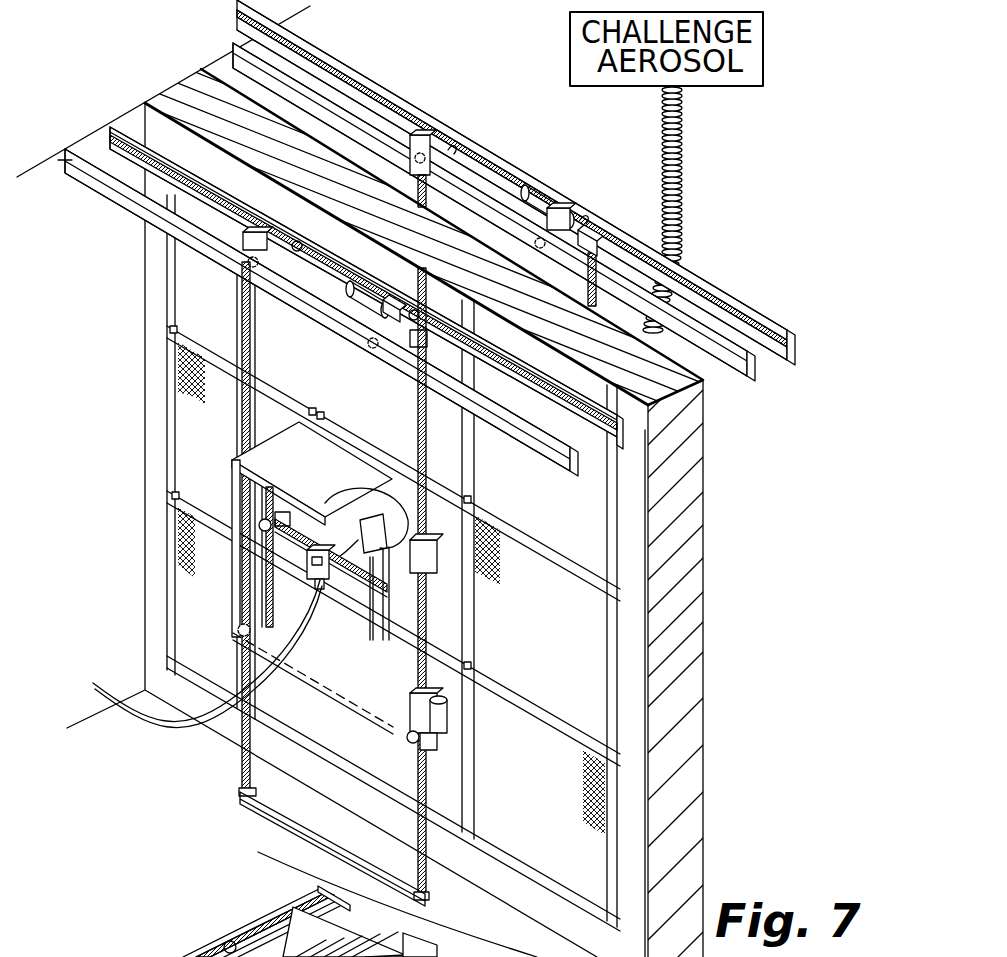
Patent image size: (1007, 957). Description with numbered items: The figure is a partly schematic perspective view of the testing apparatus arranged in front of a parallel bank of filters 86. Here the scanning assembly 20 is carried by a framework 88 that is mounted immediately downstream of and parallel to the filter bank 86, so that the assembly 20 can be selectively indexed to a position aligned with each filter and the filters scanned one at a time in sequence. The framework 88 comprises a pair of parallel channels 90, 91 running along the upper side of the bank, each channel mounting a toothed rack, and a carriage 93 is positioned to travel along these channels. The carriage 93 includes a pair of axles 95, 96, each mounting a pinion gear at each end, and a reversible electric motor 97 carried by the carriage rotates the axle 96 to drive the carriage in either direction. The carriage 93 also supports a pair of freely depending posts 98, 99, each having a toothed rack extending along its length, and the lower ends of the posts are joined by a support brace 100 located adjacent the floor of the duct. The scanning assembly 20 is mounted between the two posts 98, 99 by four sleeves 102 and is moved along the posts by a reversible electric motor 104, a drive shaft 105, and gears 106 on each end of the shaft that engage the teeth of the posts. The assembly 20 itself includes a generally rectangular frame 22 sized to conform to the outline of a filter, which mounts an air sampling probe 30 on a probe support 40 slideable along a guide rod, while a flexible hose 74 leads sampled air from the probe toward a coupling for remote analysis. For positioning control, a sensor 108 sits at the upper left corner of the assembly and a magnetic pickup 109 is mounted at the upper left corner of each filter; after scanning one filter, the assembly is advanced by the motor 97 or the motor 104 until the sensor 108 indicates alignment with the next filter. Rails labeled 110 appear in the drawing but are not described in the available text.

The scanning assembly 20 is at (307, 602).
The frame 22 is at (338, 462).
The air sampling probe 30 is at (376, 497).
The probe support 40 is at (307, 558).
The flexible hose 74 is at (163, 720).
The parallel bank of filters 86 is at (600, 652).
The framework 88 is at (331, 256).
The channel 90 is at (75, 158).
The channel 91 is at (90, 140).
The carriage 93 is at (390, 542).
The axle 95 is at (297, 242).
The axle 96 is at (414, 312).
The reversible electric motor 97 is at (393, 297).
The post 98 is at (241, 300).
The post 99 is at (426, 468).
The support brace 100 is at (293, 812).
The sleeve 102 is at (236, 455).
The reversible electric motor 104 is at (442, 725).
The drive shaft 105 is at (350, 685).
The gear 106 is at (243, 636).
The sensor 108 is at (178, 329).
The magnetic pickup 109 is at (312, 408).
The track rails 110 is at (263, 58).